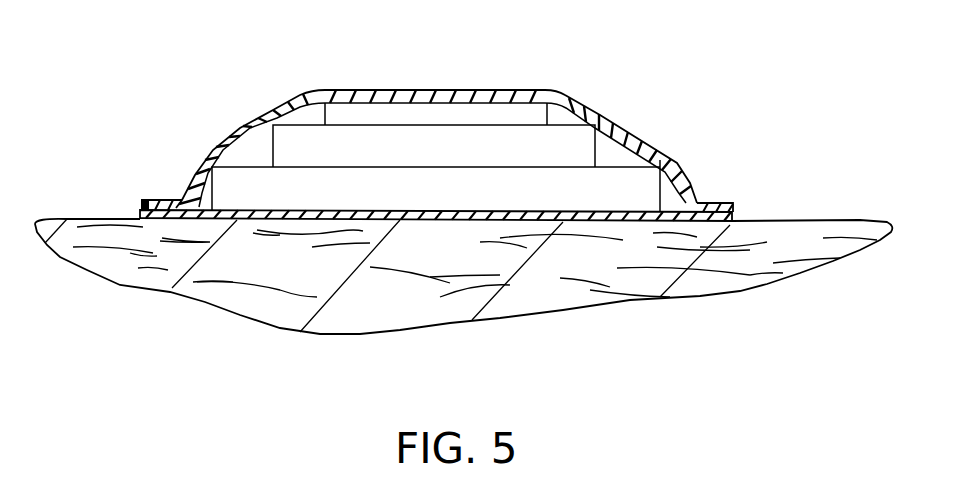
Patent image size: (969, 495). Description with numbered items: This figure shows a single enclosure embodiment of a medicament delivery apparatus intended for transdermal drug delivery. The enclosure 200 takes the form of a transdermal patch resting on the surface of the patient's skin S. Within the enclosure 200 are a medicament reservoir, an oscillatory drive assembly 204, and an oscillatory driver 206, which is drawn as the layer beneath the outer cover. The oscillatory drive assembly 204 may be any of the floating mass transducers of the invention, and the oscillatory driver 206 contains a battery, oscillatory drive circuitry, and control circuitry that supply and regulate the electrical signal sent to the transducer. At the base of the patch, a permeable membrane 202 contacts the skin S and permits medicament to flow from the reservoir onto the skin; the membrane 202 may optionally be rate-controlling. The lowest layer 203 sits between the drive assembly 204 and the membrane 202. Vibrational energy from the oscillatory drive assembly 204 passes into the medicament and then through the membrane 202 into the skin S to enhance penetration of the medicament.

The enclosure 200 is at (243, 63).
The permeable membrane 202 is at (255, 220).
The lower absorbent layer 203 is at (648, 188).
The oscillatory drive assembly 204 is at (293, 145).
The oscillatory driver 206 is at (503, 113).
The skin S is at (798, 220).